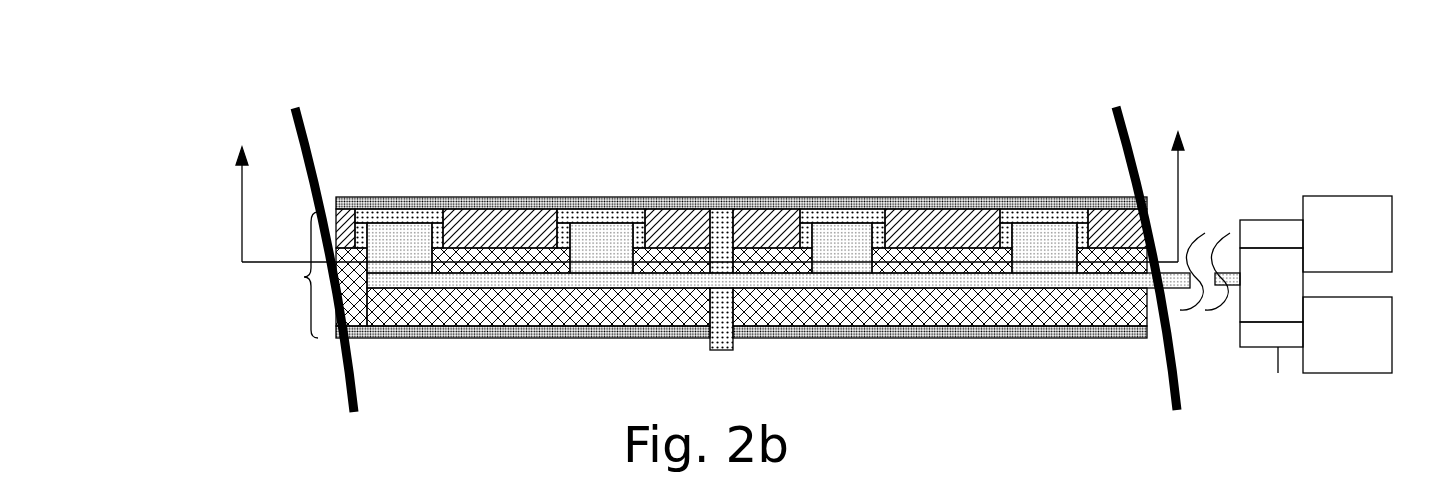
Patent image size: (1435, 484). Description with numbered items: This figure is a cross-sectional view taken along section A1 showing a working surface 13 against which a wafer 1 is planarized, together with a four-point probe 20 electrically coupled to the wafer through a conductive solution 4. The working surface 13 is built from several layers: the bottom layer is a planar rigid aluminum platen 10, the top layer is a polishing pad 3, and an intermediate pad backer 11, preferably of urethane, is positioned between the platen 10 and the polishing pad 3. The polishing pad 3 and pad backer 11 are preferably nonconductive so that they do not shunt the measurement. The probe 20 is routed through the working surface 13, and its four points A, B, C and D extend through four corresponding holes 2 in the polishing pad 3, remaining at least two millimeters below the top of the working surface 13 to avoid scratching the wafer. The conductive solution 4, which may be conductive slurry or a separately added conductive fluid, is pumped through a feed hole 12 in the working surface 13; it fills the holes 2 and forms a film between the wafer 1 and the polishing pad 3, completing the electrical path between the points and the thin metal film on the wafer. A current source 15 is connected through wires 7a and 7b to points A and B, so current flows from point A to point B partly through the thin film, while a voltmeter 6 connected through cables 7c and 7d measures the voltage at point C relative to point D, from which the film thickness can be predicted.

The wafer 1 is at (949, 200).
The holes 2 is at (436, 222).
The polishing pad 3 is at (684, 222).
The conductive solution 4 is at (720, 225).
The voltmeter 6 is at (1347, 335).
The wire 7a is at (1266, 220).
The wire 7b is at (1266, 248).
The cable 7c is at (1255, 323).
The cable 7d is at (1297, 391).
The platen 10 is at (507, 338).
The pad backer 11 is at (369, 298).
The feed holes 12 is at (720, 300).
The working surface 13 is at (303, 278).
The current source 15 is at (1347, 234).
The probe 20 is at (912, 273).
The point A is at (392, 237).
The point B is at (1050, 245).
The point C is at (835, 237).
The point D is at (595, 232).
The section A1 is at (685, 149).